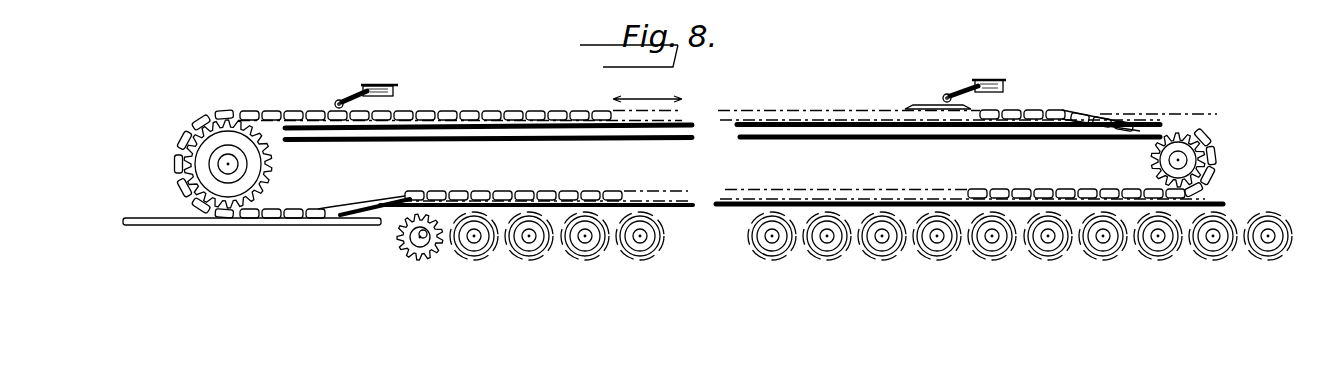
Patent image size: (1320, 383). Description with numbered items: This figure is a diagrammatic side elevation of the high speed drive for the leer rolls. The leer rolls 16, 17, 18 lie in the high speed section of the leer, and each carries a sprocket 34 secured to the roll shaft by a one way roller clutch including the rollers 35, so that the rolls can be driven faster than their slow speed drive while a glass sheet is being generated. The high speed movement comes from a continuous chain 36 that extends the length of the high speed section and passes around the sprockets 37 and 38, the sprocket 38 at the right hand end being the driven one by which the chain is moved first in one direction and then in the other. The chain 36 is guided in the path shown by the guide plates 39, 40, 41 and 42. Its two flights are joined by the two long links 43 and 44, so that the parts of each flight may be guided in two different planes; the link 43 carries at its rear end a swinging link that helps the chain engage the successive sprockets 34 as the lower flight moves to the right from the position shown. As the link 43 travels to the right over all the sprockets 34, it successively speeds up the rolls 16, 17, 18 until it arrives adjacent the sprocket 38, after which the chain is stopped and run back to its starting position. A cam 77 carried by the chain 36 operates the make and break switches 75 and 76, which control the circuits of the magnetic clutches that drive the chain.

The leer roll 16 is at (421, 241).
The leer roll 17 is at (475, 246).
The leer roll 18 is at (531, 246).
The sprocket 34 is at (400, 252).
The rollers 35 is at (416, 258).
The chain 36 is at (278, 106).
The sprocket 37 is at (284, 161).
The sprocket 38 is at (1150, 157).
The guide plate 39 is at (694, 122).
The guide plate 40 is at (660, 142).
The guide plate 41 is at (398, 212).
The guide plate 42 is at (191, 226).
The long link 43 is at (396, 196).
The long link 44 is at (1070, 112).
The make and break switch 75 is at (341, 100).
The make and break switch 76 is at (966, 84).
The cam 77 is at (924, 104).